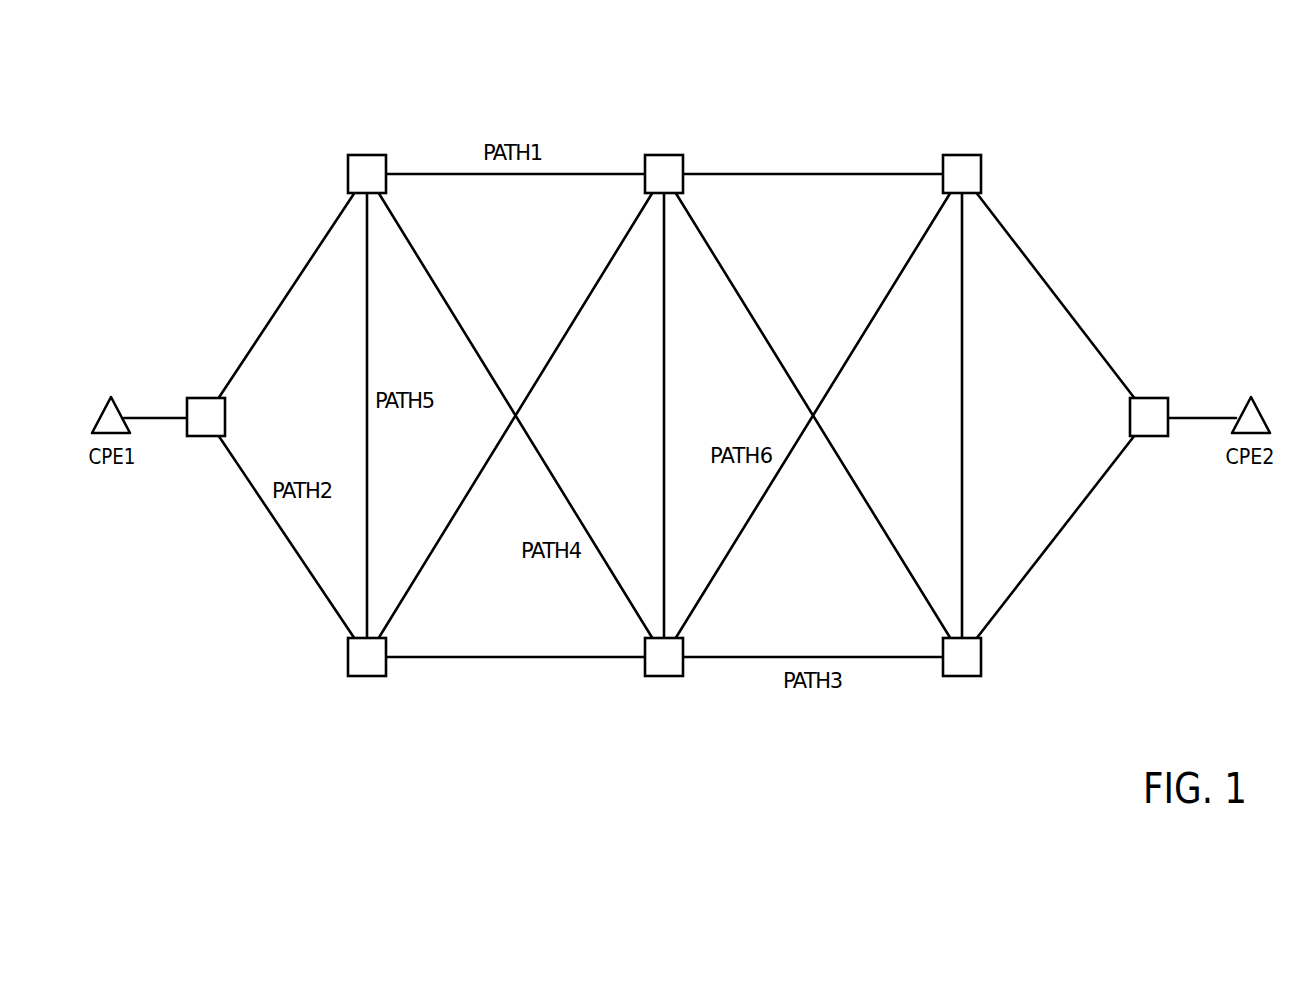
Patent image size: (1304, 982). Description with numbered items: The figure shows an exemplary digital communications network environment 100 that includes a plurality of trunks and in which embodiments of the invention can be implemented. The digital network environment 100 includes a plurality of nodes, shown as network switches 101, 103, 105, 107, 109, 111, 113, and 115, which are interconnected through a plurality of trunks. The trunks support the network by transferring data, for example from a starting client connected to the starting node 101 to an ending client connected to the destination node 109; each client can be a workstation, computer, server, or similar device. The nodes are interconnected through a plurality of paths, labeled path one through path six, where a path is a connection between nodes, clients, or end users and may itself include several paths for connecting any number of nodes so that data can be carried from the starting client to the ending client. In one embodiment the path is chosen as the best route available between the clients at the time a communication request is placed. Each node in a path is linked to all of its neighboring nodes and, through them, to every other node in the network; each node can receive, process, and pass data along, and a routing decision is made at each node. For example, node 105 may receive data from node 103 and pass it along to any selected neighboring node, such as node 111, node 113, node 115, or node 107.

The digital network environment 100 is at (1133, 110).
The starting node 101 is at (203, 396).
The network switch 103 is at (363, 153).
The network switch 105 is at (661, 153).
The network switch 107 is at (961, 153).
The destination node 109 is at (1152, 396).
The network switch 111 is at (360, 677).
The network switch 113 is at (658, 677).
The network switch 115 is at (957, 677).